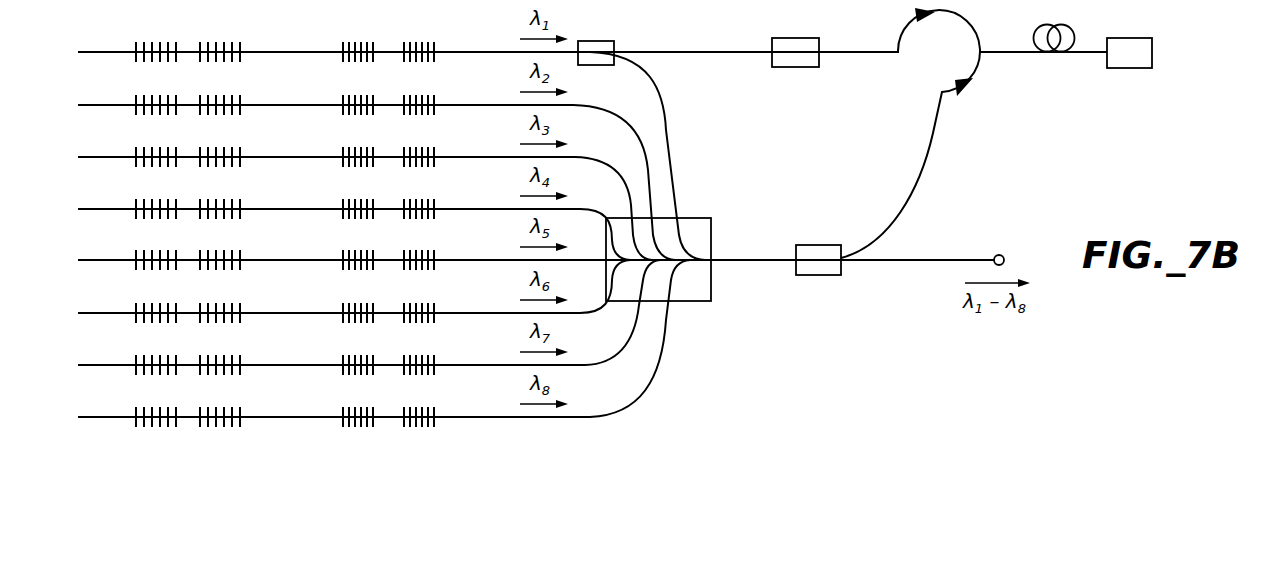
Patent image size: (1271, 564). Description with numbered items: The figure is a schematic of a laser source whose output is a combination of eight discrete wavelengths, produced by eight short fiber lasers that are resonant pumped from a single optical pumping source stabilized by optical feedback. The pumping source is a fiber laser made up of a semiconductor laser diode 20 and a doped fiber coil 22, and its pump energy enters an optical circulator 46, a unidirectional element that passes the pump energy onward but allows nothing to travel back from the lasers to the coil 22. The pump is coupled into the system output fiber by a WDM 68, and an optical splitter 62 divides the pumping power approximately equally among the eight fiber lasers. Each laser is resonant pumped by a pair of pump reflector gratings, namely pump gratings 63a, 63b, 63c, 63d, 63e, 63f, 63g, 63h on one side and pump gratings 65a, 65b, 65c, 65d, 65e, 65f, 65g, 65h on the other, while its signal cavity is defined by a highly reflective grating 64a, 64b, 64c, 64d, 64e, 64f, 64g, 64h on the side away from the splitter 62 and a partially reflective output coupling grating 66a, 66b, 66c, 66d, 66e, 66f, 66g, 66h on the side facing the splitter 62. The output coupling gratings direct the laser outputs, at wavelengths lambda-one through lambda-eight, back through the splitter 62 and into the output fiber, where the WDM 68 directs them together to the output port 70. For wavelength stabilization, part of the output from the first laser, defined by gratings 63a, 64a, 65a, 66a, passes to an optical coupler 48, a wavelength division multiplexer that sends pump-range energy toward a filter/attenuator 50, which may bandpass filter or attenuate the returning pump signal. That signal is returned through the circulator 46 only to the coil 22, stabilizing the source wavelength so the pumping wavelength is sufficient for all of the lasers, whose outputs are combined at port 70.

The semiconductor laser diode 20 is at (1135, 68).
The doped fiber coil 22 is at (1075, 36).
The optical circulator 46 is at (980, 67).
The optical coupler 48 is at (593, 41).
The filter/attenuator 50 is at (797, 67).
The optical splitter 62 is at (670, 306).
The WDM 68 is at (826, 276).
The output port 70 is at (997, 254).
The pump reflector grating 63a is at (158, 42).
The pump reflector grating 63b is at (158, 95).
The pump reflector grating 63c is at (158, 147).
The pump reflector grating 63d is at (158, 199).
The pump reflector grating 63e is at (158, 250).
The pump reflector grating 63f is at (158, 303).
The pump reflector grating 63g is at (158, 355).
The pump reflector grating 63h is at (158, 407).
The highly reflective grating 64a is at (240, 42).
The highly reflective grating 64b is at (240, 95).
The highly reflective grating 64c is at (240, 147).
The highly reflective grating 64d is at (240, 199).
The highly reflective grating 64e is at (240, 250).
The highly reflective grating 64f is at (240, 303).
The highly reflective grating 64g is at (240, 355).
The highly reflective grating 64h is at (240, 407).
The partially reflective grating 66a is at (360, 42).
The partially reflective grating 66b is at (360, 95).
The partially reflective grating 66c is at (360, 147).
The partially reflective grating 66d is at (360, 199).
The partially reflective grating 66e is at (360, 250).
The partially reflective grating 66f is at (360, 303).
The partially reflective grating 66g is at (360, 355).
The partially reflective grating 66h is at (360, 407).
The pump reflector grating 65a is at (425, 42).
The pump reflector grating 65b is at (425, 95).
The pump reflector grating 65c is at (425, 147).
The pump reflector grating 65d is at (425, 199).
The pump reflector grating 65e is at (425, 250).
The pump reflector grating 65f is at (425, 303).
The pump reflector grating 65g is at (425, 355).
The pump reflector grating 65h is at (425, 407).